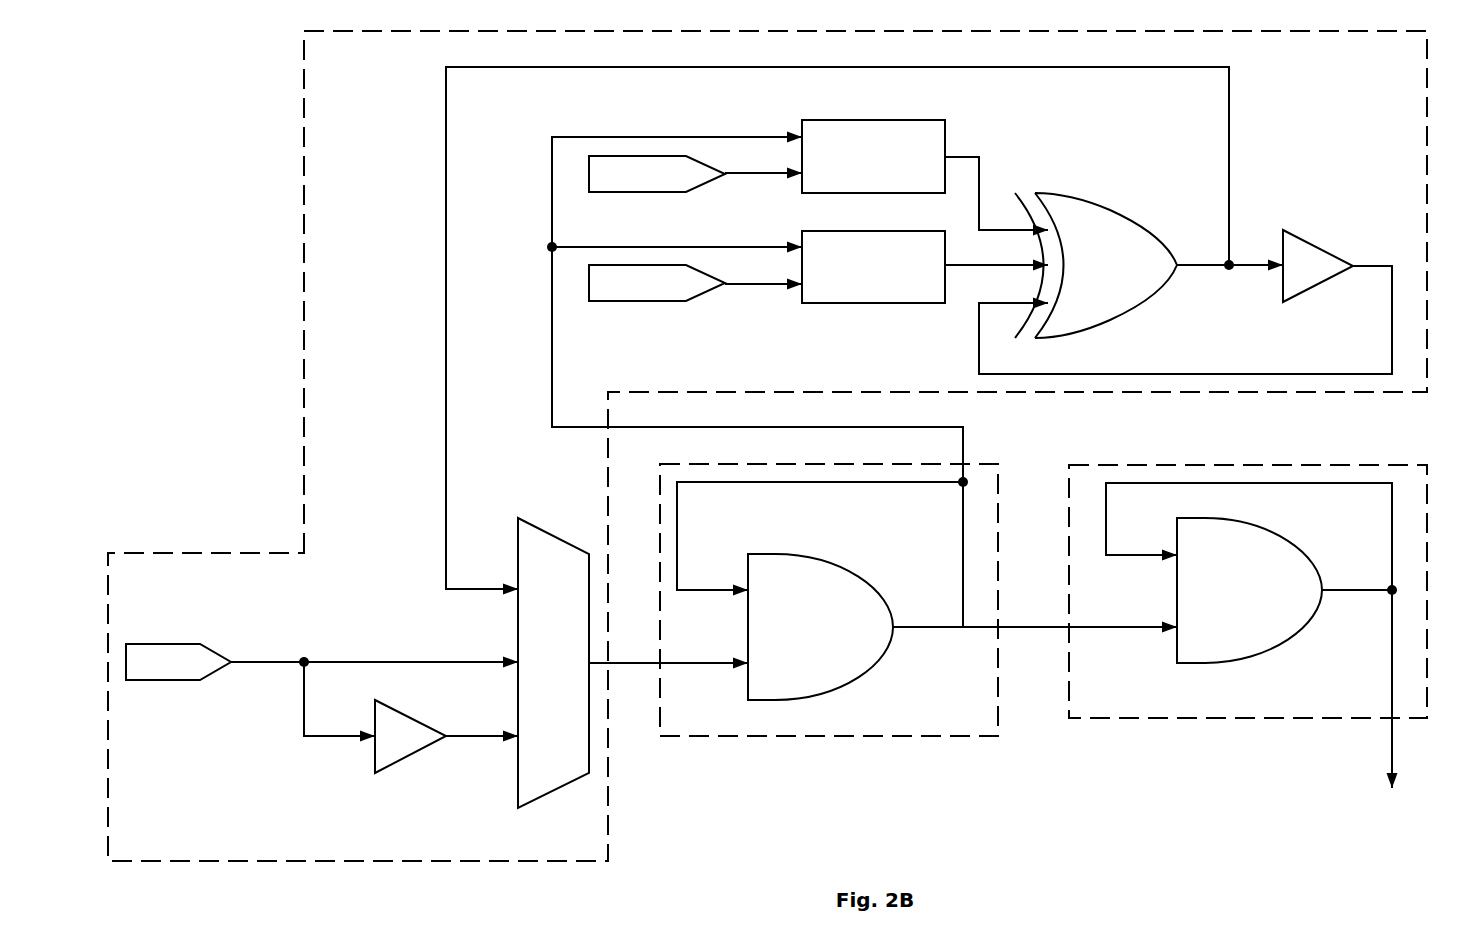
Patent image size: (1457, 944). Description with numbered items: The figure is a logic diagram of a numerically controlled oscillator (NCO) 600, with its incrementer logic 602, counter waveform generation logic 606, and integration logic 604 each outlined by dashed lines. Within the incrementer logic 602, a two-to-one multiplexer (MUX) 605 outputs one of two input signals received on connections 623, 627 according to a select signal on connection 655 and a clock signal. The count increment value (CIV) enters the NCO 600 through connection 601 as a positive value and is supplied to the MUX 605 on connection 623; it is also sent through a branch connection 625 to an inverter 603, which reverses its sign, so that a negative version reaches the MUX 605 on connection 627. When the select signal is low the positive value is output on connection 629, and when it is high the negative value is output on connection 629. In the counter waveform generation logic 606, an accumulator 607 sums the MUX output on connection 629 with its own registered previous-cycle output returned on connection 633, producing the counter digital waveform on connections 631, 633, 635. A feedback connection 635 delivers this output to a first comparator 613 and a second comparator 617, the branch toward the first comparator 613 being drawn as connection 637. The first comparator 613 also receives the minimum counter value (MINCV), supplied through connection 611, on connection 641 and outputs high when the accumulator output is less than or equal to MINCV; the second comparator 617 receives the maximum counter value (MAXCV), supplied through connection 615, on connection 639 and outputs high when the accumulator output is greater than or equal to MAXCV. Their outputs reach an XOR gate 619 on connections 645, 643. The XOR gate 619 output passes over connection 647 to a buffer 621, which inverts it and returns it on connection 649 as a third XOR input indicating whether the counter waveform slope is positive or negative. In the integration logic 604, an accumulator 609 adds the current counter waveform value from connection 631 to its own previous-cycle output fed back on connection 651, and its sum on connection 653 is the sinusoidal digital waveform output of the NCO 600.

The numerically controlled oscillator 600 is at (228, 224).
The connection 601 is at (165, 644).
The incrementer logic 602 is at (300, 440).
The inverter 603 is at (398, 743).
The integration logic 604 is at (1250, 720).
The two-to-one multiplexer 605 is at (553, 535).
The counter waveform generation logic 606 is at (818, 740).
The accumulator 607 is at (845, 665).
The accumulator 609 is at (1270, 628).
The connection 611 is at (660, 301).
The first comparator 613 is at (873, 283).
The connection 615 is at (660, 192).
The second comparator 617 is at (872, 128).
The XOR gate 619 is at (1122, 230).
The buffer 621 is at (1302, 250).
The connection 623 is at (388, 662).
The branch connection 625 is at (304, 700).
The connection 627 is at (478, 736).
The connection 629 is at (623, 665).
The connection 631 is at (1040, 632).
The connection 633 is at (680, 528).
The feedback connection 635 is at (700, 137).
The comparator input line 637 is at (660, 247).
The connection 639 is at (767, 173).
The connection 641 is at (767, 284).
The connection 643 is at (979, 175).
The connection 645 is at (962, 265).
The connection 647 is at (1245, 270).
The connection 649 is at (1352, 374).
The connection 651 is at (1390, 562).
The connection 653 is at (1385, 745).
The connection 655 is at (446, 320).